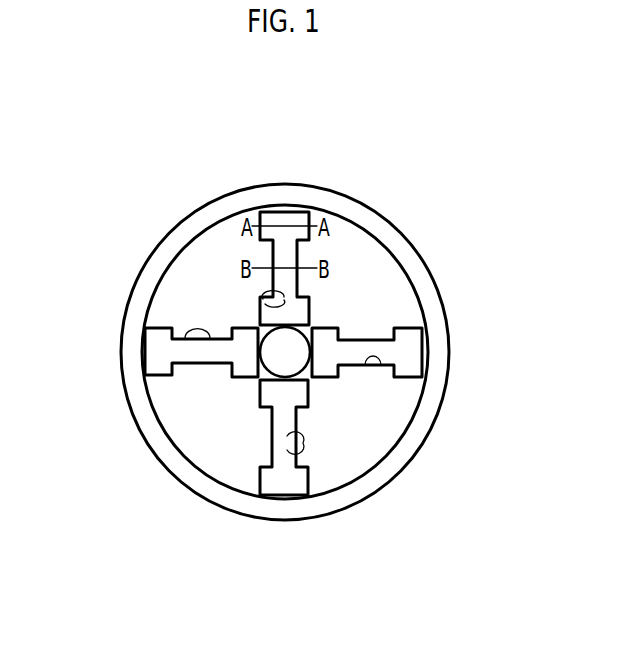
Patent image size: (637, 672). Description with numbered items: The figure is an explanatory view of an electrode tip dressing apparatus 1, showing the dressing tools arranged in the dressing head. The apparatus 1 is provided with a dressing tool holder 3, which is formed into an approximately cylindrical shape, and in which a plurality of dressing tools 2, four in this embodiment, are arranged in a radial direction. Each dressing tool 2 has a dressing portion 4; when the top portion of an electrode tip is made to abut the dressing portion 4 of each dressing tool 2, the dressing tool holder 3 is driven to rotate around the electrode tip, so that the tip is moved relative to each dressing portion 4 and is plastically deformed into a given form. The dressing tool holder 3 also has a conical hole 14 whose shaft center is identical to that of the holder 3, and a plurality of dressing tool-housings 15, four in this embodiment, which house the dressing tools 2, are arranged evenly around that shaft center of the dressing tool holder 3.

The electrode tip dressing apparatus 1 is at (383, 176).
The dressing tool 2 is at (284, 390).
The dressing tool holder 3 is at (455, 290).
The dressing portion 4 is at (271, 318).
The conical hole 14 is at (367, 447).
The dressing tool-housing 15 is at (264, 309).